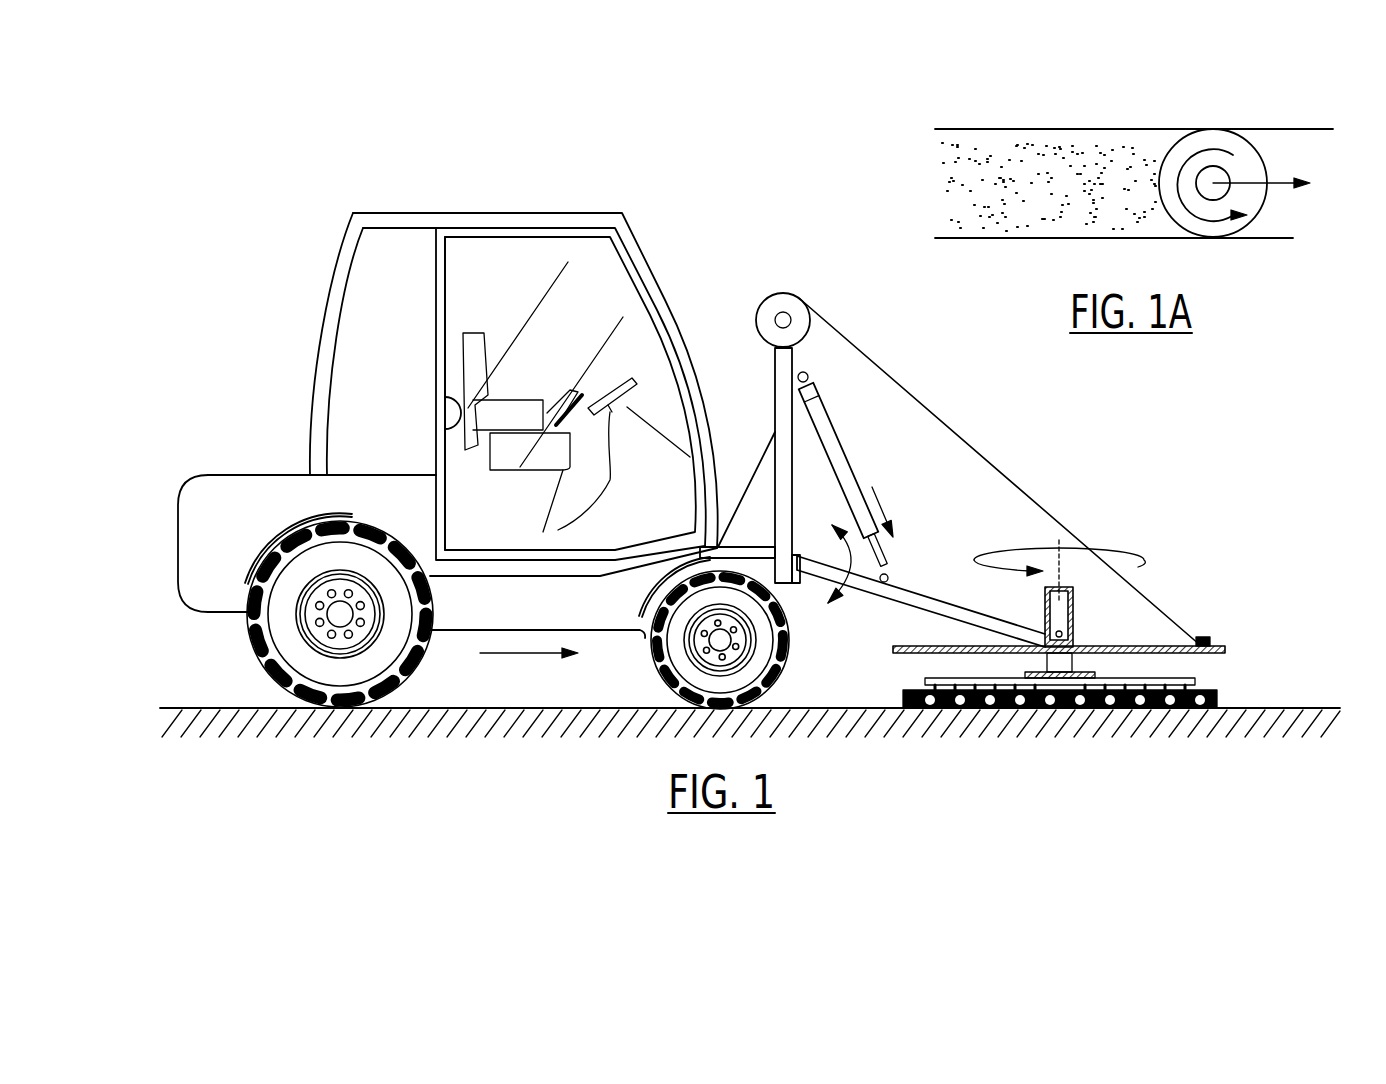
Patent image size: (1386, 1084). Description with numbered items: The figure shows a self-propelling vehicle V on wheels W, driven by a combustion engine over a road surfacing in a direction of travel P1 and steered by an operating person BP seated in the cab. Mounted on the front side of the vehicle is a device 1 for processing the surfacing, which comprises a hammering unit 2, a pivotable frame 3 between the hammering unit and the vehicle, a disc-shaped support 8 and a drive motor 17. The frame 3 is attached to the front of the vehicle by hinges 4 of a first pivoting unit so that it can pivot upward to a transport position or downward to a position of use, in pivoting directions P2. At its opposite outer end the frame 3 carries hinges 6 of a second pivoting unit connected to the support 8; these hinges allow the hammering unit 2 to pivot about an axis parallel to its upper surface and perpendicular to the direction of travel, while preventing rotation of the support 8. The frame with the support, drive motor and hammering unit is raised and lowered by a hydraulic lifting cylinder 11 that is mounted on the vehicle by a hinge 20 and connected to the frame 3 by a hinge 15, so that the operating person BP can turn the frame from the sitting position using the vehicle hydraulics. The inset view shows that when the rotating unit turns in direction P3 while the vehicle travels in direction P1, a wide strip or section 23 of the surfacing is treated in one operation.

In FIG. 1, the device 1 is at (920, 562).
In FIG. 1, the hammering unit 2 is at (1182, 605).
In FIG. 1, the pivotable frame 3 is at (928, 604).
In FIG. 1, the hinges of first pivoting unit 4 is at (805, 570).
In FIG. 1, the hinges of second pivoting unit 6 is at (1062, 633).
In FIG. 1, the support 8 is at (1225, 648).
In FIG. 1, the lifting cylinder 11 is at (828, 432).
In FIG. 1, the hinge 15 is at (938, 556).
In FIG. 1, the drive motor 17 is at (1075, 600).
In FIG. 1, the hinge 20 is at (797, 378).
In FIG. 1A, the strip or section of surfacing 23 is at (1137, 138).
In FIG. 1, the vehicle V is at (388, 245).
In FIG. 1, the wheels W is at (290, 646).
In FIG. 1, the operating person BP is at (482, 330).
In FIG. 1, the direction of travel P1 is at (529, 672).
In FIG. 1A, the direction of travel P1 is at (1278, 175).
In FIG. 1, the pivoting directions P2 is at (828, 550).
In FIG. 1A, the direction of rotation P3 is at (1218, 150).